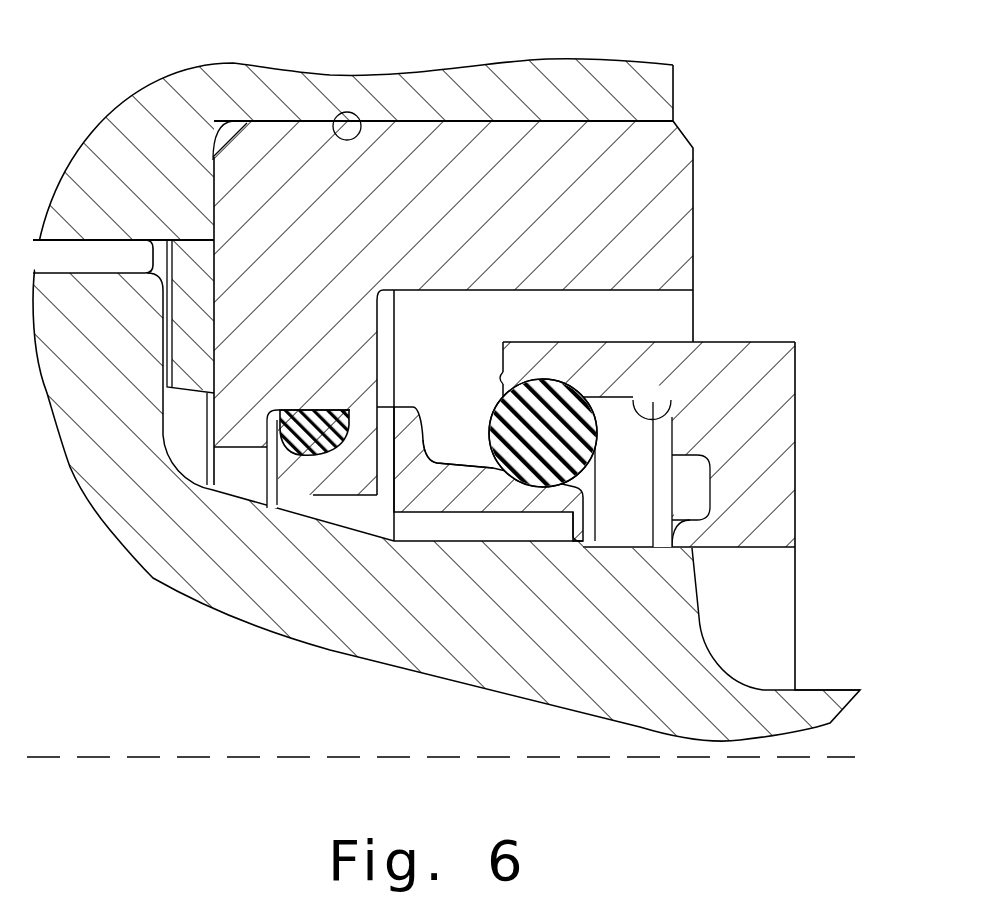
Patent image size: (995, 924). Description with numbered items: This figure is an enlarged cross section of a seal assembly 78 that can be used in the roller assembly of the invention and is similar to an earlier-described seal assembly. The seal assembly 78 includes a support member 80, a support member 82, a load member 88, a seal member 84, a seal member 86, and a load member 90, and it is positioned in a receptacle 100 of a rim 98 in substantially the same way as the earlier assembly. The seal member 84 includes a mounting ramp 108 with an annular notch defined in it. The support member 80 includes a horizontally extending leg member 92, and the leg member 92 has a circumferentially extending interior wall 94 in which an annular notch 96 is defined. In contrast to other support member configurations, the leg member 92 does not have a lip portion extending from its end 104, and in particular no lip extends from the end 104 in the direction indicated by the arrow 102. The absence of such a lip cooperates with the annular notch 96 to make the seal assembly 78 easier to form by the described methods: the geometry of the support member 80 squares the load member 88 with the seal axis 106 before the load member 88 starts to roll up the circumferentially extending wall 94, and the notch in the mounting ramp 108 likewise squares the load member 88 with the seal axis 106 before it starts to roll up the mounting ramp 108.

The seal assembly 78 is at (780, 129).
The support member 80 is at (795, 466).
The support member 82 is at (693, 148).
The seal member 84 is at (404, 422).
The seal member 86 is at (320, 473).
The load member 88 is at (598, 438).
The load member 90 is at (280, 452).
The leg member 92 is at (574, 342).
The circumferentially extending interior wall 94 is at (672, 418).
The annular notch 96 is at (506, 373).
The rim 98 is at (660, 62).
The receptacle 100 is at (340, 112).
The arrow 102 is at (471, 423).
The end 104 is at (503, 342).
The seal axis 106 is at (127, 756).
The mounting ramp 108 is at (445, 455).